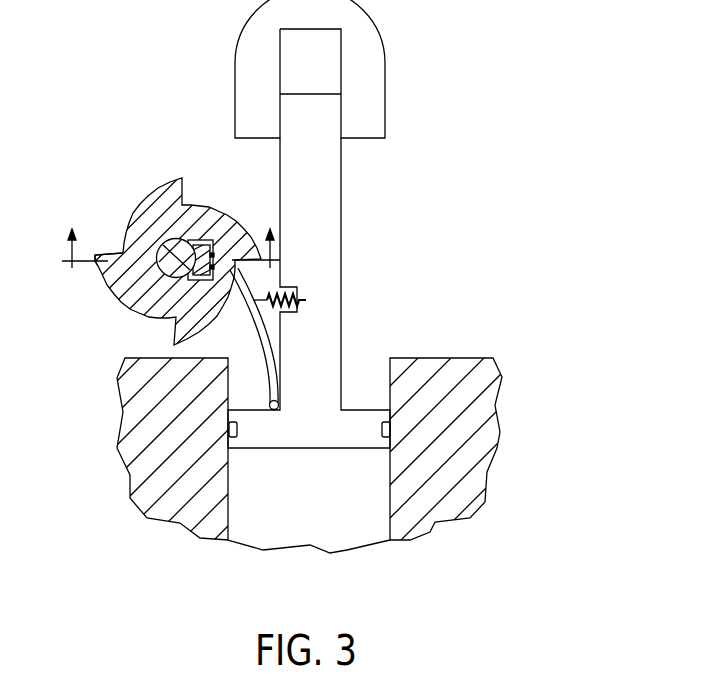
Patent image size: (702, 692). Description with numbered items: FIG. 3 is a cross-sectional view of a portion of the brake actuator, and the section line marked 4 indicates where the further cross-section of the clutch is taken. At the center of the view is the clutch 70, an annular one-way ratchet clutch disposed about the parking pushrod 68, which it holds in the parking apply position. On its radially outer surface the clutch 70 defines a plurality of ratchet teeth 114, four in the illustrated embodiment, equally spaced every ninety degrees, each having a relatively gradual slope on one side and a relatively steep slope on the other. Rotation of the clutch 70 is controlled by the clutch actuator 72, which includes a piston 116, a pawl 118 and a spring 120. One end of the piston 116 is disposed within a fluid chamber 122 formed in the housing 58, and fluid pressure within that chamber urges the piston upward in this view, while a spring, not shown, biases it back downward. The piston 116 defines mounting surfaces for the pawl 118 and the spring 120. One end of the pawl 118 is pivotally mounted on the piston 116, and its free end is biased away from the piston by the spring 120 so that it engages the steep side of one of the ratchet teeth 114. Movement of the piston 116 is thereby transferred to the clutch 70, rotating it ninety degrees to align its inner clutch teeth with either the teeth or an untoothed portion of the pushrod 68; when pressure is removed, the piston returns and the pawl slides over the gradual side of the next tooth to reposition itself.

The housing 58 is at (440, 425).
The parking pushrod 68 is at (171, 252).
The clutch 70 is at (141, 250).
The clutch actuator 72 is at (442, 268).
The ratchet teeth 114 is at (108, 270).
The piston 116 is at (318, 375).
The pawl 118 is at (270, 378).
The spring 120 is at (300, 302).
The fluid chamber 122 is at (316, 503).
The section line 4- 4 is at (171, 234).